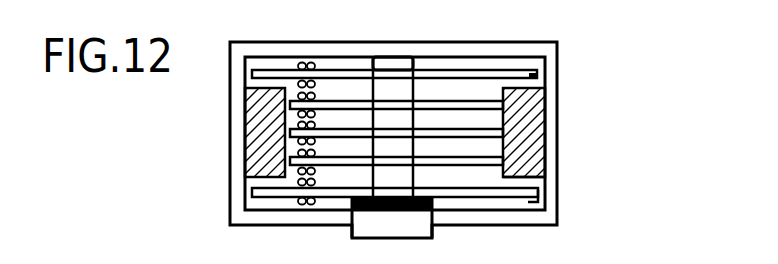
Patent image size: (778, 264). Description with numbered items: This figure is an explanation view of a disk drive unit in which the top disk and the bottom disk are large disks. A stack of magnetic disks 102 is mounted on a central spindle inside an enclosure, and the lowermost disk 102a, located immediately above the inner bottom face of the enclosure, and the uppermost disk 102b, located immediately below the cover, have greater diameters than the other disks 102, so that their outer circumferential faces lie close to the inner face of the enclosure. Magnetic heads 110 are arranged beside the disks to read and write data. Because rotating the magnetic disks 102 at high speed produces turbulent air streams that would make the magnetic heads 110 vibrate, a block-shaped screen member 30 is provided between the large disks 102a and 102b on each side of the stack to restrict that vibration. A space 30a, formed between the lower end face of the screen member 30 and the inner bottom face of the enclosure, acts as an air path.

The magnetic head 110 is at (312, 63).
The screen member 30 is at (258, 126).
The space 30a is at (505, 178).
The magnetic disk 102 is at (503, 130).
The lowermost disk 102a is at (527, 200).
The uppermost disk 102b is at (537, 73).